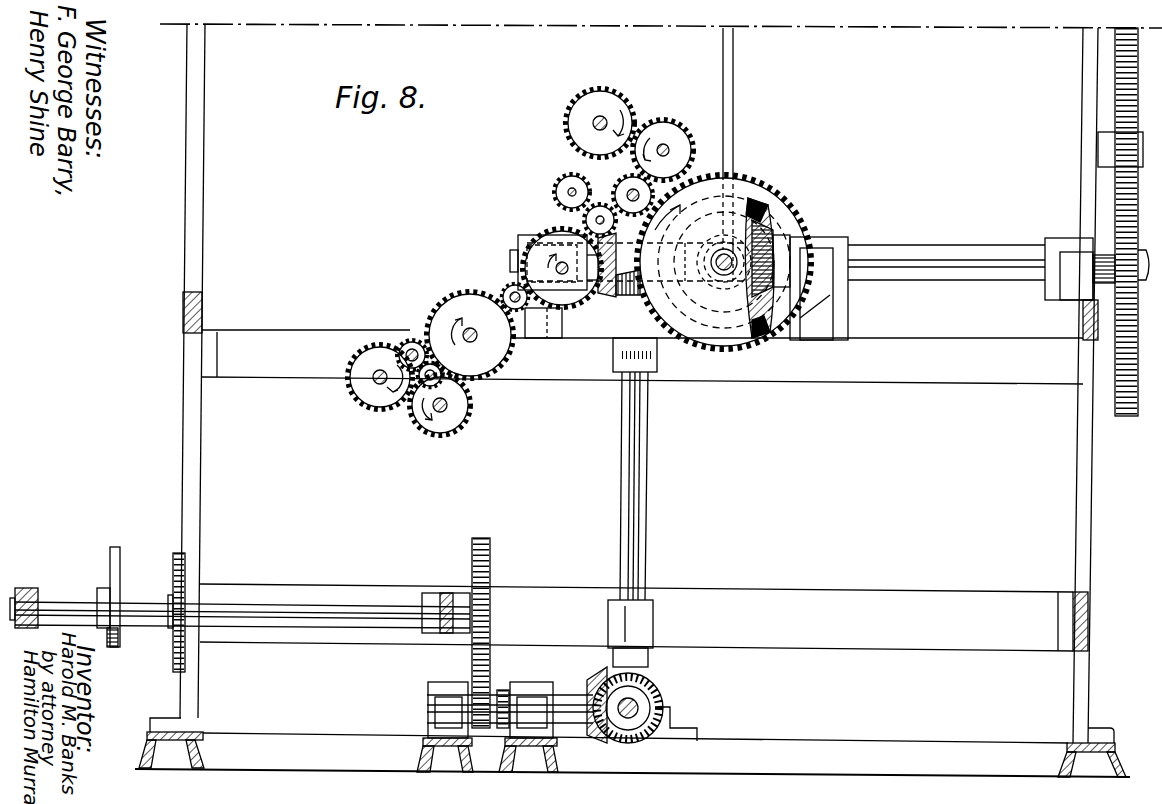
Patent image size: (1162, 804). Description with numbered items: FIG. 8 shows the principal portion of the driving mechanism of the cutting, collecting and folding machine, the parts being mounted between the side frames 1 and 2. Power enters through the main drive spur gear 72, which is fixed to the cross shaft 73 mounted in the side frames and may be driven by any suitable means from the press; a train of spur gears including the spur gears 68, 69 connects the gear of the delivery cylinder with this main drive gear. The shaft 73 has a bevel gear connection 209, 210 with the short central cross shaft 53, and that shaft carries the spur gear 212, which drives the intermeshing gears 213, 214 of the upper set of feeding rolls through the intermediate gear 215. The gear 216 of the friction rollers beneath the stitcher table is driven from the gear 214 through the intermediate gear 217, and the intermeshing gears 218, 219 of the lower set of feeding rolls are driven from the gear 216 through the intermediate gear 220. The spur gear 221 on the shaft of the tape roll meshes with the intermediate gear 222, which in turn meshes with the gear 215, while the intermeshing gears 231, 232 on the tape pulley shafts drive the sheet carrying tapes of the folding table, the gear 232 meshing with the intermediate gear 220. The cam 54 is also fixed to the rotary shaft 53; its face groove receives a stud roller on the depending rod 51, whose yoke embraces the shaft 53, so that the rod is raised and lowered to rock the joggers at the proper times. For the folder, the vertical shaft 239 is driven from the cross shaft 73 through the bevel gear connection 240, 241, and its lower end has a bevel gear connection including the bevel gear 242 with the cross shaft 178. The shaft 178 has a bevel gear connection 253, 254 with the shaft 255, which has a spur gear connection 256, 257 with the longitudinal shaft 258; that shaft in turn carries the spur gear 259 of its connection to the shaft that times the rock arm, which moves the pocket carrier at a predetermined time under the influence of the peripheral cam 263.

The side frame 1 is at (193, 478).
The side frame 2 is at (1083, 538).
The depending rod 51 is at (744, 139).
The central cross shaft 53 is at (724, 254).
The cam 54 is at (752, 222).
The spur gear 68 is at (1120, 146).
The spur gear 69 is at (1118, 43).
The main drive spur gear 72 is at (1120, 240).
The cross shaft 73 is at (946, 251).
The cross shaft 178 is at (648, 713).
The bevel gear 209 is at (760, 260).
The bevel gear 210 is at (806, 250).
The spur gear 212 is at (757, 200).
The gear 213 is at (556, 181).
The gear 214 is at (578, 218).
The intermediate gear 215 is at (623, 185).
The gear 216 is at (508, 292).
The intermediate gear 217 is at (532, 247).
The gear 218 is at (412, 338).
The gear 219 is at (443, 382).
The intermediate gear 220 is at (452, 300).
The spur gear 221 is at (600, 110).
The intermediate gear 222 is at (668, 138).
The gear 231 is at (355, 390).
The gear 232 is at (428, 422).
The vertical shaft 239 is at (642, 513).
The bevel gear 240 is at (608, 300).
The bevel gear 241 is at (628, 297).
The bevel gear 242 is at (657, 678).
The bevel gear 253 is at (650, 694).
The bevel gear 254 is at (594, 744).
The shaft 255 is at (427, 703).
The spur gear 256 is at (489, 697).
The spur gear 257 is at (497, 529).
The longitudinal shaft 258 is at (345, 580).
The spur gear 259 is at (185, 562).
The peripheral cam 263 is at (118, 556).